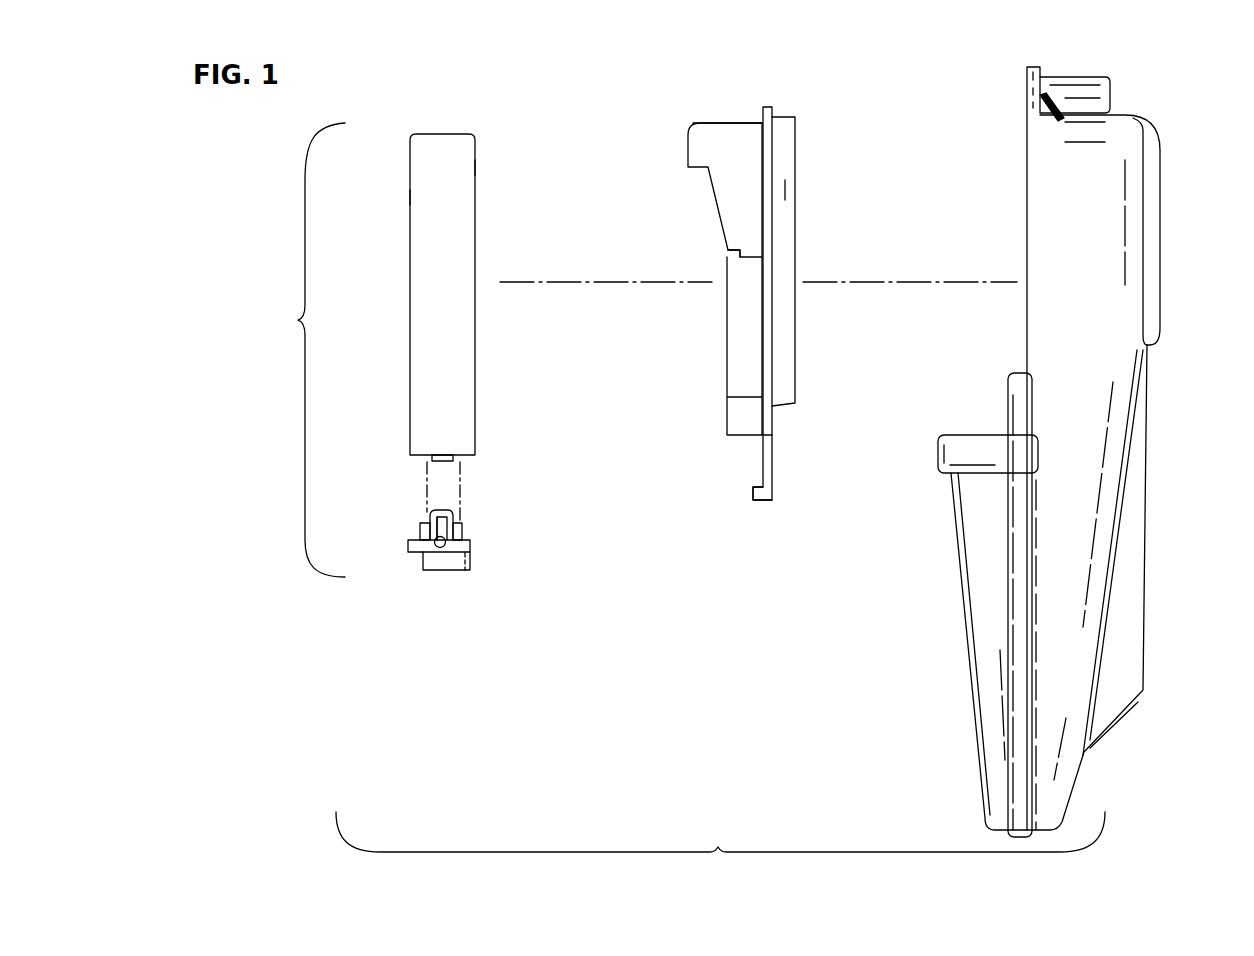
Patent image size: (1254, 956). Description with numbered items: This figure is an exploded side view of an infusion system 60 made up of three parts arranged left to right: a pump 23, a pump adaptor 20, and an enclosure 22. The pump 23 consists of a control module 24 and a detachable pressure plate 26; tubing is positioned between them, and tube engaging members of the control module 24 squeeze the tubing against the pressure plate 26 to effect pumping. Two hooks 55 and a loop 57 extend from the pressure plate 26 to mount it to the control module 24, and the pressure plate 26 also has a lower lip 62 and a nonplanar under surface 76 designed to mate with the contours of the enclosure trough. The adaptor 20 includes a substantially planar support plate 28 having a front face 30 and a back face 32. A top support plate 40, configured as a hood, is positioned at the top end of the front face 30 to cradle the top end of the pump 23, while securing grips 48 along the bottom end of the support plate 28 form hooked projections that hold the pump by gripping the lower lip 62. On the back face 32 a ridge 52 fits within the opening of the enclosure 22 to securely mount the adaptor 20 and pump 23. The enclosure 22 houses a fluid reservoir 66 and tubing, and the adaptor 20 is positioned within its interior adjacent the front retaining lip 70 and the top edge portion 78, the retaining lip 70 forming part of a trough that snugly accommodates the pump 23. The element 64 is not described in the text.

The pump adaptor 20 is at (702, 122).
The enclosure 22 is at (1160, 152).
The pump 23 is at (303, 350).
The control module 24 is at (418, 132).
The pressure plate 26 is at (420, 528).
The support plate 28 is at (760, 107).
The front face 30 is at (735, 251).
The back face 32 is at (785, 190).
The top support plate 40 is at (738, 122).
The securing grips 48 is at (755, 502).
The ridge 52 is at (783, 117).
The hooks 55 is at (462, 523).
The loop 57 is at (432, 512).
The infusion system 60 is at (720, 850).
The lower lip 62 is at (474, 575).
The battery right side 64 is at (475, 165).
The fluid reservoir 66 is at (410, 197).
The front retaining lip 70 is at (938, 447).
The nonplanar under surface 76 is at (423, 548).
The top edge portion 78 is at (1027, 97).